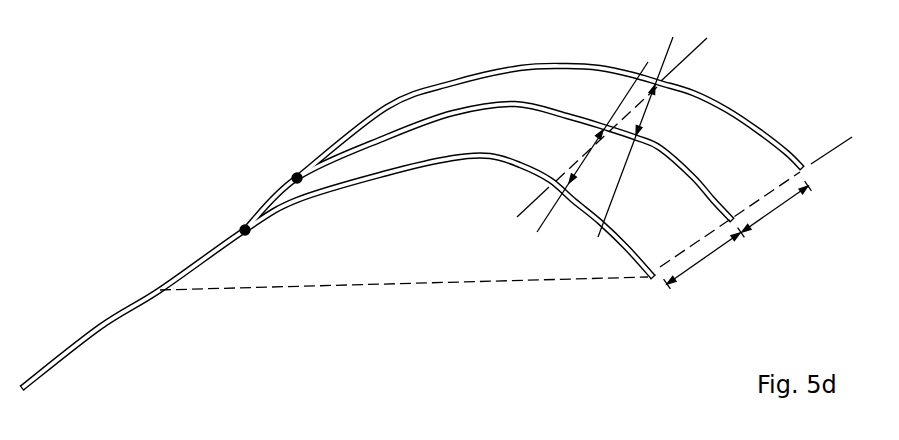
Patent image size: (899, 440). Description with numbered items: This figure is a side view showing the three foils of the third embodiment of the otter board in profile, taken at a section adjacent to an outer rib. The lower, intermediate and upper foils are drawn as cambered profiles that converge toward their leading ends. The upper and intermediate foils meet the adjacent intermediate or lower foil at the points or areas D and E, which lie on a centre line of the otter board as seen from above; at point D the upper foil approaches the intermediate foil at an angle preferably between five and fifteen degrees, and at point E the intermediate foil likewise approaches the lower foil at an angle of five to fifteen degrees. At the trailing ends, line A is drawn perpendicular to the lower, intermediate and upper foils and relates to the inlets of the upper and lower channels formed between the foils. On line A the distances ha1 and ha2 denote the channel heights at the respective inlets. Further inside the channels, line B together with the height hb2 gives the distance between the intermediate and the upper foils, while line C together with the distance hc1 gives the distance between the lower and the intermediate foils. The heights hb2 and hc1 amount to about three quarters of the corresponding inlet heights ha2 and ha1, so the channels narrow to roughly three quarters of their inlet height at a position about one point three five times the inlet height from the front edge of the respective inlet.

The line A is at (766, 192).
The line B is at (644, 126).
The line C is at (601, 133).
The point D is at (295, 178).
The point E is at (243, 231).
The channel height ha1 is at (704, 264).
The channel height ha2 is at (776, 210).
The height hb2 is at (659, 110).
The distance hc1 is at (592, 157).